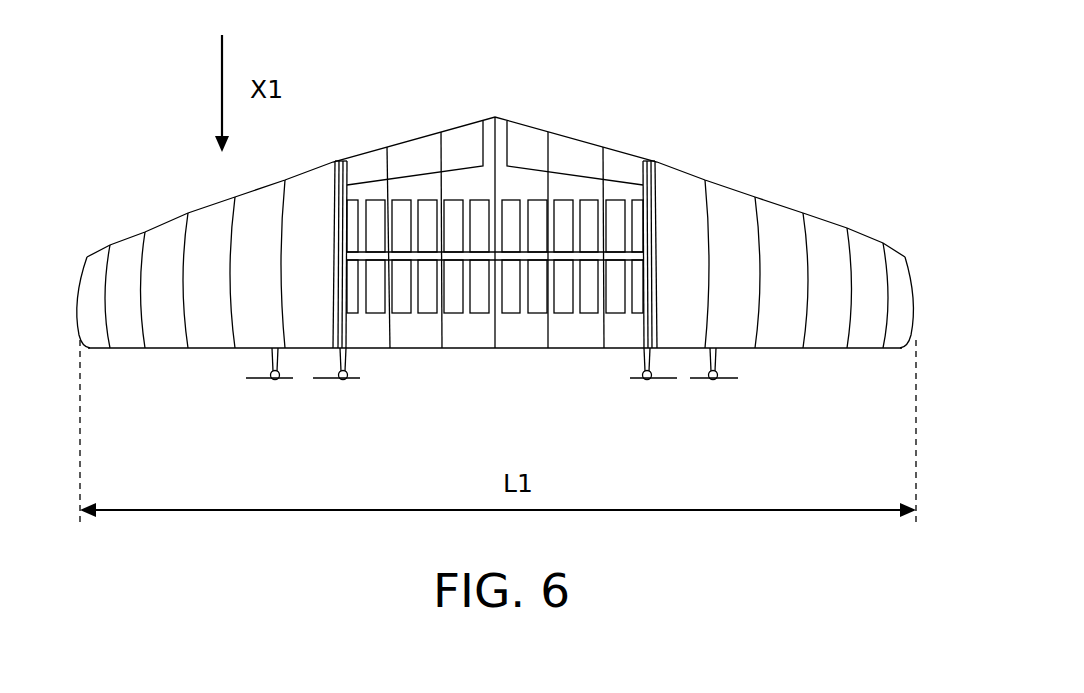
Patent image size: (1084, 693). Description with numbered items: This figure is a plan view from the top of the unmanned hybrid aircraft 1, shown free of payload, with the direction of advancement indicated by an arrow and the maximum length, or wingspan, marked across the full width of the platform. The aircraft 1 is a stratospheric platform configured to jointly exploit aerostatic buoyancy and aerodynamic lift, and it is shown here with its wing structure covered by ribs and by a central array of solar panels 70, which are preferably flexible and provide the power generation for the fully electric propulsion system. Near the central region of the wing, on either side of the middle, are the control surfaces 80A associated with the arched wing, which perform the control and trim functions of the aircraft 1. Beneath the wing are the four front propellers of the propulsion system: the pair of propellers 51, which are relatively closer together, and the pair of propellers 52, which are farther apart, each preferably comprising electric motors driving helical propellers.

The hybrid aircraft 1 is at (692, 118).
The front propellers 51 is at (341, 395).
The front propellers 52 is at (259, 388).
The solar panels 70 is at (567, 294).
The control surfaces 80A is at (403, 163).